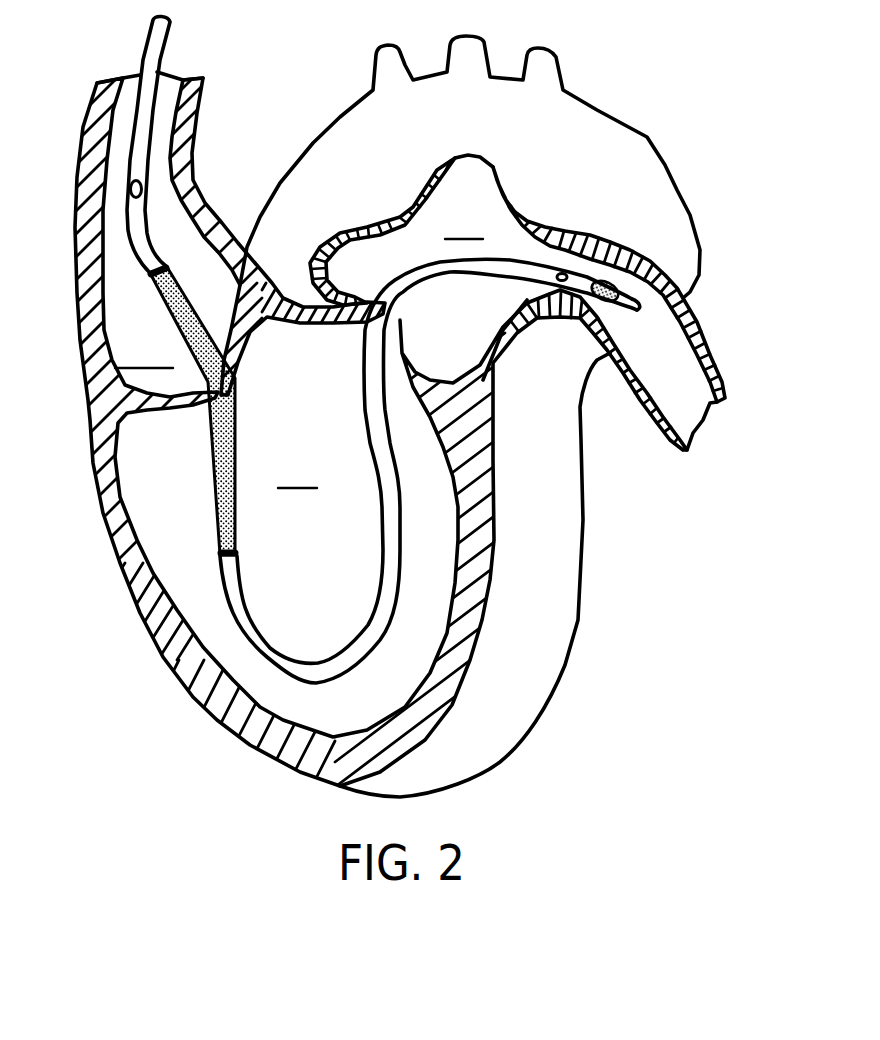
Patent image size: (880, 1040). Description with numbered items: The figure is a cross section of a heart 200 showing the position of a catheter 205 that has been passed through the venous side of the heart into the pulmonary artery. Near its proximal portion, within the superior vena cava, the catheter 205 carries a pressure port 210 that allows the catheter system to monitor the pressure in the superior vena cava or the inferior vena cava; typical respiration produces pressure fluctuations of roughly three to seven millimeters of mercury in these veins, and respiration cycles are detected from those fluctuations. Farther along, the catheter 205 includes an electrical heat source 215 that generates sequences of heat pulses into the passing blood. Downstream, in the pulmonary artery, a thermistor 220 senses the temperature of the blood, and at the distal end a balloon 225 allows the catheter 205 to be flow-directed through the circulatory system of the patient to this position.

The heart 200 is at (582, 612).
The catheter 205 is at (147, 53).
The pressure port 210 is at (130, 189).
The electrical heat source 215 is at (217, 522).
The thermistor 220 is at (568, 275).
The balloon 225 is at (640, 290).